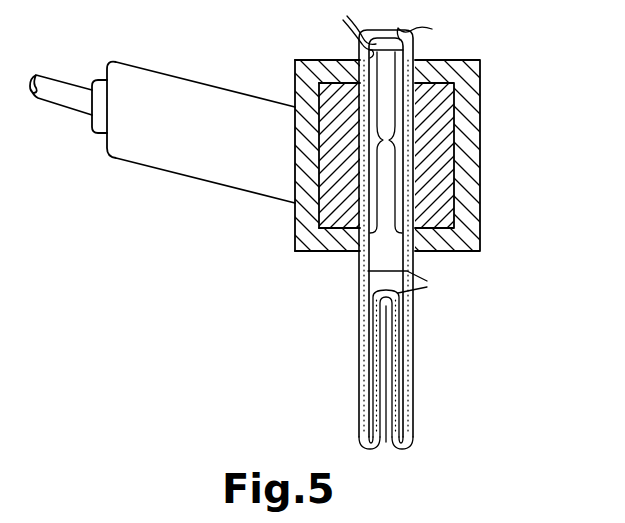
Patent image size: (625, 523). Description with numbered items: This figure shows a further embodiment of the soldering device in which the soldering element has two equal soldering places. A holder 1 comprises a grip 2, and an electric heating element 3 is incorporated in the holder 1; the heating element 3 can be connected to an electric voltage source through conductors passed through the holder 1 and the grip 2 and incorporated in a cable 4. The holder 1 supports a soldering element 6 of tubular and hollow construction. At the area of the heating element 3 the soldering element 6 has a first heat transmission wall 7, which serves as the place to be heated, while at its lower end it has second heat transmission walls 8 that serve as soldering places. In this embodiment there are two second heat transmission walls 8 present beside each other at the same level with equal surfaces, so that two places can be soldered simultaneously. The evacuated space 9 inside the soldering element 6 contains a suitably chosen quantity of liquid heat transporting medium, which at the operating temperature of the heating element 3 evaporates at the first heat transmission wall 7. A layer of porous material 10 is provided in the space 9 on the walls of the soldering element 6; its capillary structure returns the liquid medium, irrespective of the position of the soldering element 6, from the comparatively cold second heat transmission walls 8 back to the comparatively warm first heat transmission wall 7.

The holder 1 is at (473, 160).
The grip 2 is at (208, 165).
The electric heating element 3 is at (440, 213).
The cable 4 is at (69, 94).
The soldering element 6 is at (422, 27).
The first heat transmission wall 7 is at (386, 142).
The second heat transmission wall 8 is at (387, 452).
The evacuated space 9 is at (392, 251).
The layer of porous material 10 is at (388, 151).